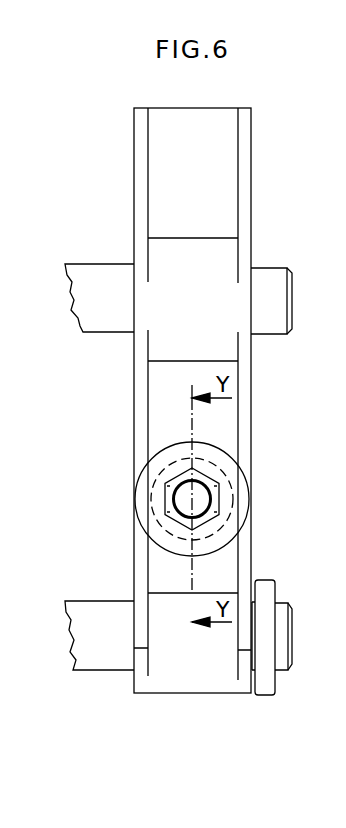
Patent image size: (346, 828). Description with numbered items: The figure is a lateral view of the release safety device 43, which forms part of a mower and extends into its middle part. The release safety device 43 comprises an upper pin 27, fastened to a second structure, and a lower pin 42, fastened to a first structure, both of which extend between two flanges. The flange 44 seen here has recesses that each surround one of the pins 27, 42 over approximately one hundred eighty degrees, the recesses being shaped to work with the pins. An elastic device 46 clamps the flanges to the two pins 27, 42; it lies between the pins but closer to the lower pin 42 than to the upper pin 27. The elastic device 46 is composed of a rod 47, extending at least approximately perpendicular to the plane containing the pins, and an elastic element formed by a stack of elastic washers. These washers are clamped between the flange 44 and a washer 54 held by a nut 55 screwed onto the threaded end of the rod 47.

The flange 44 is at (226, 188).
The upper pin 27 is at (277, 327).
The release safety device 43 is at (125, 413).
The elastic device 46 is at (250, 478).
The washer 54 is at (232, 455).
The rod 47 is at (198, 503).
The nut 55 is at (174, 513).
The lower pin 42 is at (280, 645).